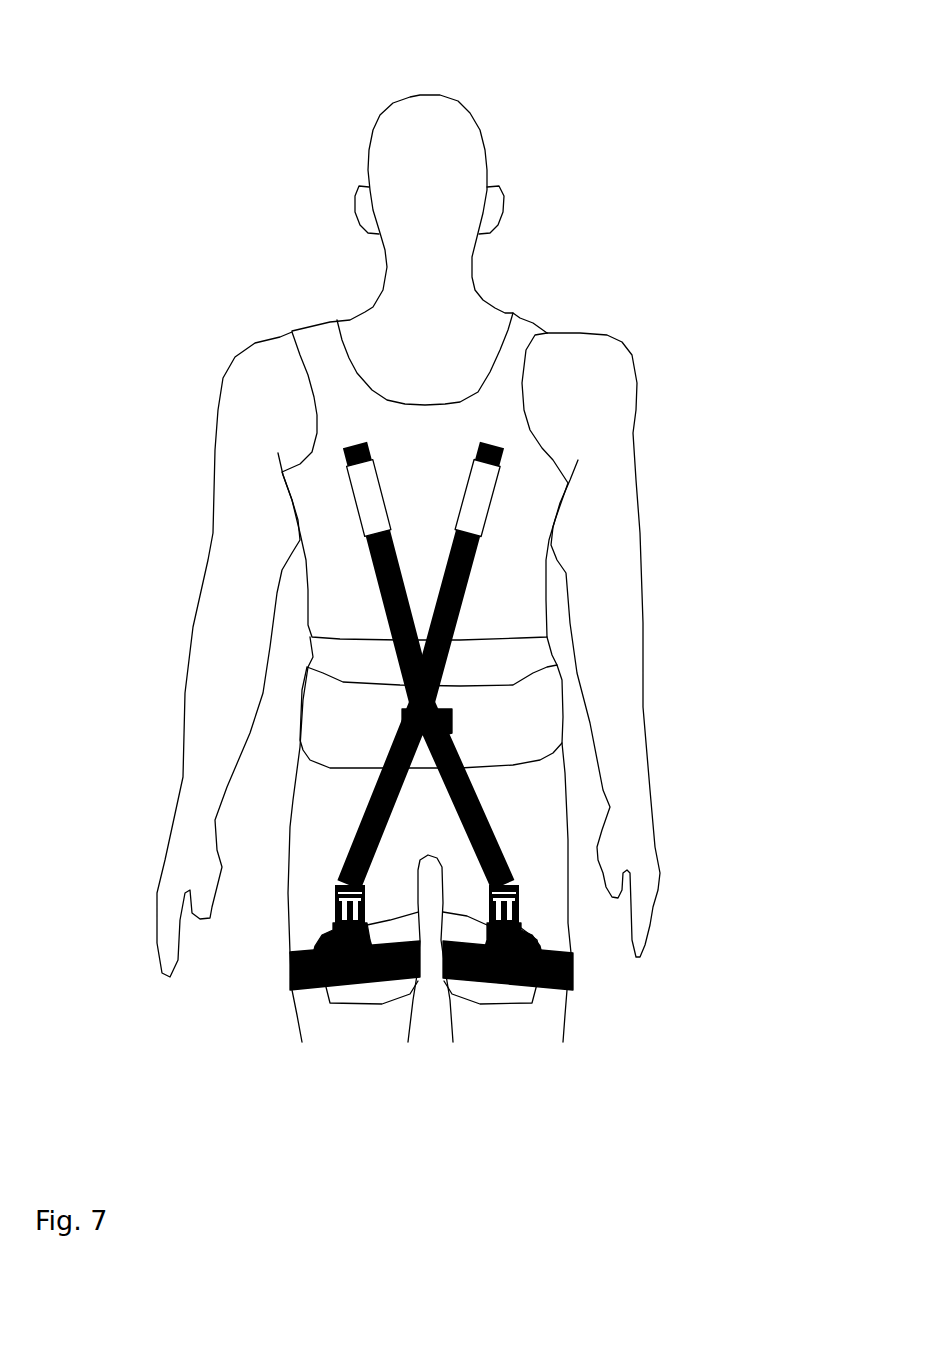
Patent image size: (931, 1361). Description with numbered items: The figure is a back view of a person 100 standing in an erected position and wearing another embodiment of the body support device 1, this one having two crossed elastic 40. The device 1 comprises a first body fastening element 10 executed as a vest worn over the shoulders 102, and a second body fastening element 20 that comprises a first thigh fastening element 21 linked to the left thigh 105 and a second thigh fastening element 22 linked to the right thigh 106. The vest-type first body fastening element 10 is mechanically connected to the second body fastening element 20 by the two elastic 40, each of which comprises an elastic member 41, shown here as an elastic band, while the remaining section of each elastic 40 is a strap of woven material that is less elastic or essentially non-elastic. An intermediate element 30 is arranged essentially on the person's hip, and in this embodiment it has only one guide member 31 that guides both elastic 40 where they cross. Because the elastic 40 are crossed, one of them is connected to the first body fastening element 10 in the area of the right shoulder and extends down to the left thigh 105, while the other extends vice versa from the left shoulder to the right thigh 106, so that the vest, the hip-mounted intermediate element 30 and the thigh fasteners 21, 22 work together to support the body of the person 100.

The body support device 1 is at (726, 372).
The person 100 is at (421, 554).
The shoulders 102 is at (272, 382).
The first body fastening element 10 is at (528, 335).
The elastic 40 is at (296, 665).
The elastic member 41 is at (477, 495).
The guide member 31 is at (450, 711).
The intermediate element 30 is at (537, 722).
The second body fastening element 20 is at (521, 915).
The first thigh fastening element 21 is at (392, 935).
The second thigh fastening element 22 is at (480, 940).
The left thigh 105 is at (383, 1030).
The right thigh 106 is at (493, 1032).